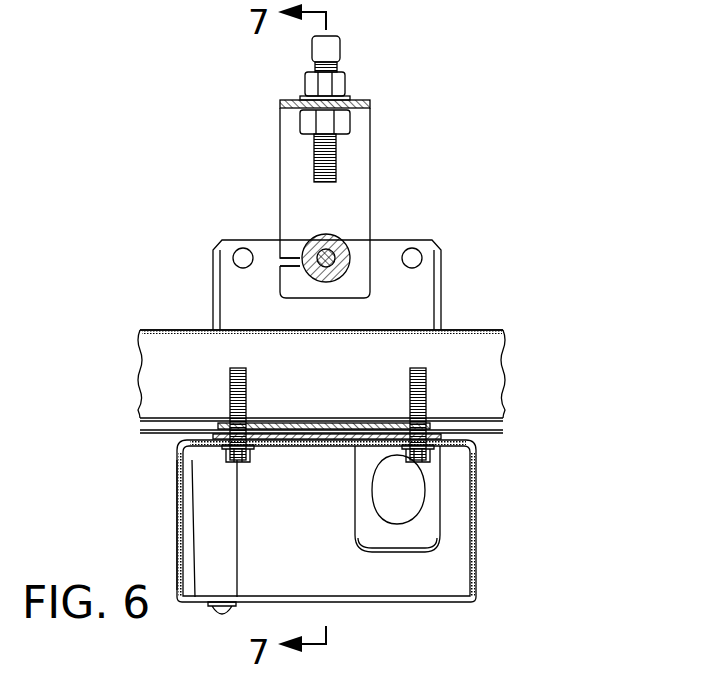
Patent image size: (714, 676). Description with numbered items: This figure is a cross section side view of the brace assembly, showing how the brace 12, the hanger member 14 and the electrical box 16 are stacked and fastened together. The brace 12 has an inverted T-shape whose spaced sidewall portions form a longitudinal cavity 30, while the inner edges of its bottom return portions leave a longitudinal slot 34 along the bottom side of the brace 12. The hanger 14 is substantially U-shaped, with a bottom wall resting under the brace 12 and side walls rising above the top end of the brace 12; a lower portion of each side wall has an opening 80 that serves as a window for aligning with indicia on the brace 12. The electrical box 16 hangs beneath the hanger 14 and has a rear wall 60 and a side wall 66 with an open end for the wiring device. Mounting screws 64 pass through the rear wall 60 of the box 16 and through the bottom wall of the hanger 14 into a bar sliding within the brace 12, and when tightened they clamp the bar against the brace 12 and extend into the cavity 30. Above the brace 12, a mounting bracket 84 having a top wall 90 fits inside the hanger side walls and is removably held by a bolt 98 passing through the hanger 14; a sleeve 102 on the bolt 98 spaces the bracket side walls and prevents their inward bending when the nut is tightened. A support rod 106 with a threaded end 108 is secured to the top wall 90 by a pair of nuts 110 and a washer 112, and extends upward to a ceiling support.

The brace 12 is at (503, 327).
The hanger member 14 is at (435, 240).
The electrical box 16 is at (482, 528).
The longitudinal cavity 30 is at (480, 355).
The longitudinal slot 34 is at (468, 432).
The rear wall 60 is at (275, 440).
The mounting screws 64 is at (229, 394).
The side wall 66 is at (178, 535).
The opening 80 is at (455, 428).
The mounting bracket 84 is at (372, 160).
The top wall 90 is at (365, 100).
The bolt 98 is at (302, 257).
The sleeve 102 is at (345, 250).
The support rod 106 is at (340, 52).
The threaded end 108 is at (316, 160).
The nuts 110 is at (305, 80).
The washer 112 is at (295, 100).